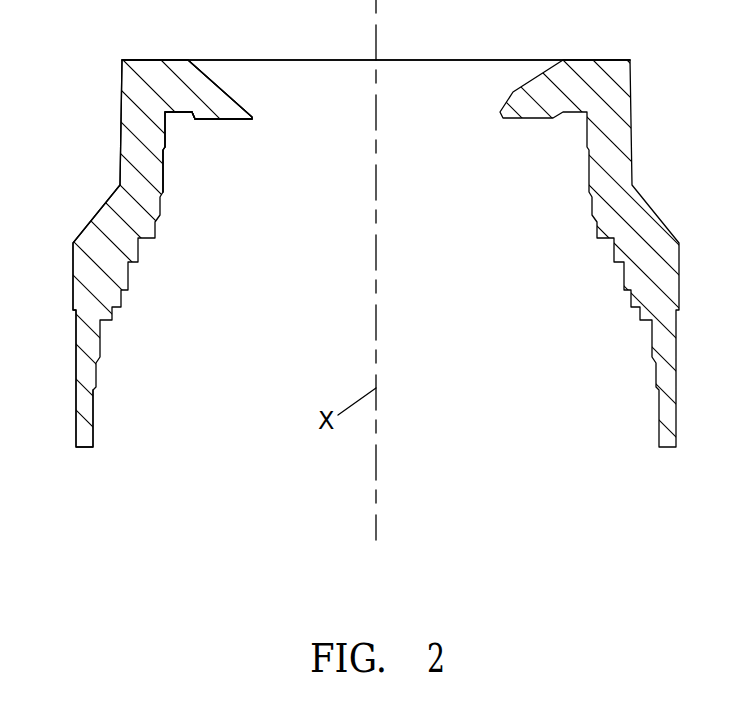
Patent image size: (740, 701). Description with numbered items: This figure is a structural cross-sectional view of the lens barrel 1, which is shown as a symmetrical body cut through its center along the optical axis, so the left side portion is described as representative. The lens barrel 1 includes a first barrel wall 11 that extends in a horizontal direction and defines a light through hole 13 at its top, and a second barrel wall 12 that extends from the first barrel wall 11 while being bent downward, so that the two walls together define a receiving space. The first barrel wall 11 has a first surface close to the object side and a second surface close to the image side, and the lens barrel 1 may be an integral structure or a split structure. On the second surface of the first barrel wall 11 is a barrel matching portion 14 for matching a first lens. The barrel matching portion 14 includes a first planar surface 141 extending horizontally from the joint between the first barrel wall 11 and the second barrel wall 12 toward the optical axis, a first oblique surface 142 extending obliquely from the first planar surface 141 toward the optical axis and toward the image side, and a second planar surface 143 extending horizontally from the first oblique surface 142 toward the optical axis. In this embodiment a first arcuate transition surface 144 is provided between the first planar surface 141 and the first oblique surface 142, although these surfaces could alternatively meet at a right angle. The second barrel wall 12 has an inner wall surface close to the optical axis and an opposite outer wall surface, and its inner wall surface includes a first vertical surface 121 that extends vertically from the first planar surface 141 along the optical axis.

The lens barrel 1 is at (46, 47).
The first barrel wall 11 is at (176, 82).
The second barrel wall 12 is at (135, 177).
The first vertical surface 121 is at (167, 139).
The light through hole 13 is at (283, 44).
The barrel matching portion 14 is at (255, 164).
The first planar surface 141 is at (179, 117).
The first oblique surface 142 is at (193, 117).
The second planar surface 143 is at (216, 121).
The first arcuate transition surface 144 is at (192, 113).